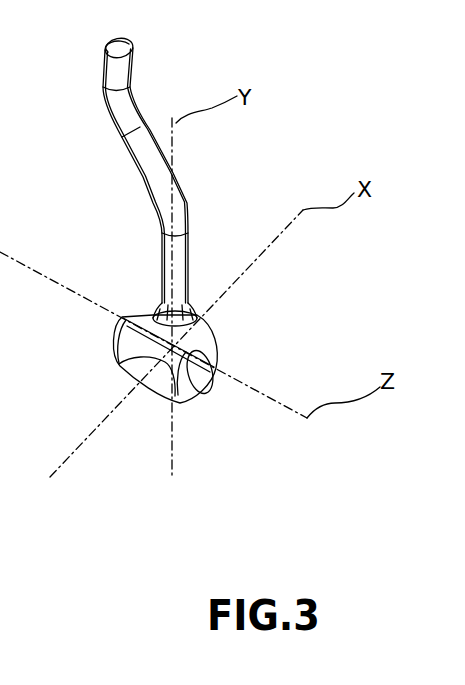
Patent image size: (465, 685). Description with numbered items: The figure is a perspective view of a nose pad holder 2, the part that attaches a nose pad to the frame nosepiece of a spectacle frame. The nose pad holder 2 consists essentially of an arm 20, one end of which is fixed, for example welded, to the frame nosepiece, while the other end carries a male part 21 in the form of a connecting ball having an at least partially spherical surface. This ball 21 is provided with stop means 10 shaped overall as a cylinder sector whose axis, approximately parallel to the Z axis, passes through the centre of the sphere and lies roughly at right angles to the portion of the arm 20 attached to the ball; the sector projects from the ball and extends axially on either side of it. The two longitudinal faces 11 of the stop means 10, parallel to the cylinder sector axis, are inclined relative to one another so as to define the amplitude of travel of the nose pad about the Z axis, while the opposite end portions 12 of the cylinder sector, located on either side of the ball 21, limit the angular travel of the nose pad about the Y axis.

The nose pad holder 2 is at (350, 120).
The stop means 10 is at (160, 362).
The longitudinal faces 11 is at (203, 385).
The opposite end portions 12 is at (210, 367).
The arm 20 is at (118, 108).
The male part 21 is at (196, 333).